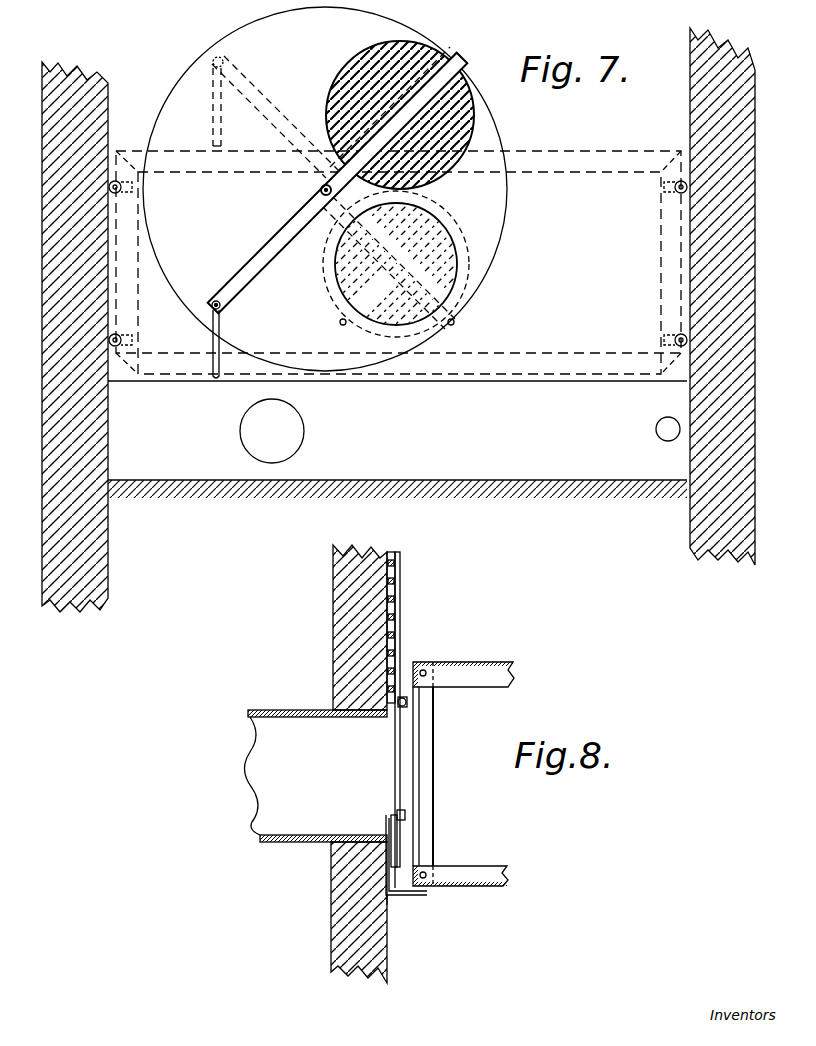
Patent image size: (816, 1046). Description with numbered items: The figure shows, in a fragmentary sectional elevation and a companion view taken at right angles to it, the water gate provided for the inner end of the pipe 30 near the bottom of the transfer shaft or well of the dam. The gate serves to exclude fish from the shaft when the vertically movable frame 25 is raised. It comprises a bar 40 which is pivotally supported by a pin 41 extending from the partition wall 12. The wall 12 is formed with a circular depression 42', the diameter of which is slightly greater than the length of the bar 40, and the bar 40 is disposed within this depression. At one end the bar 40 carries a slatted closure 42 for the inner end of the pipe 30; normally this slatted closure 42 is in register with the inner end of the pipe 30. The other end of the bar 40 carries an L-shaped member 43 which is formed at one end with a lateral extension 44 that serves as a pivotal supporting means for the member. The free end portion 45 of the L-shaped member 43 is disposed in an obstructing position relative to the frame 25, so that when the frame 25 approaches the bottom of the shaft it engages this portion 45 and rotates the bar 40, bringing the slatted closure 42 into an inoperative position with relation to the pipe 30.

In FIG. 8, the partition wall 12 is at (331, 928).
In FIG. 7, the frame 25 is at (563, 148).
In FIG. 8, the frame 25 is at (488, 878).
In FIG. 7, the pipe 30 is at (448, 232).
In FIG. 8, the pipe 30 is at (302, 843).
In FIG. 7, the bar 40 is at (288, 233).
In FIG. 8, the bar 40 is at (399, 747).
In FIG. 7, the pin 41 is at (324, 183).
In FIG. 8, the pin 41 is at (409, 699).
In FIG. 7, the slatted closure 42 is at (402, 97).
In FIG. 8, the slatted closure 42 is at (431, 627).
In FIG. 7, the circular depression 42' is at (253, 97).
In FIG. 8, the circular depression 42' is at (417, 921).
In FIG. 7, the L-shaped member 43 is at (222, 342).
In FIG. 8, the L-shaped member 43 is at (393, 882).
In FIG. 8, the lateral extension 44 is at (401, 814).
In FIG. 8, the free end portion 45 is at (417, 895).